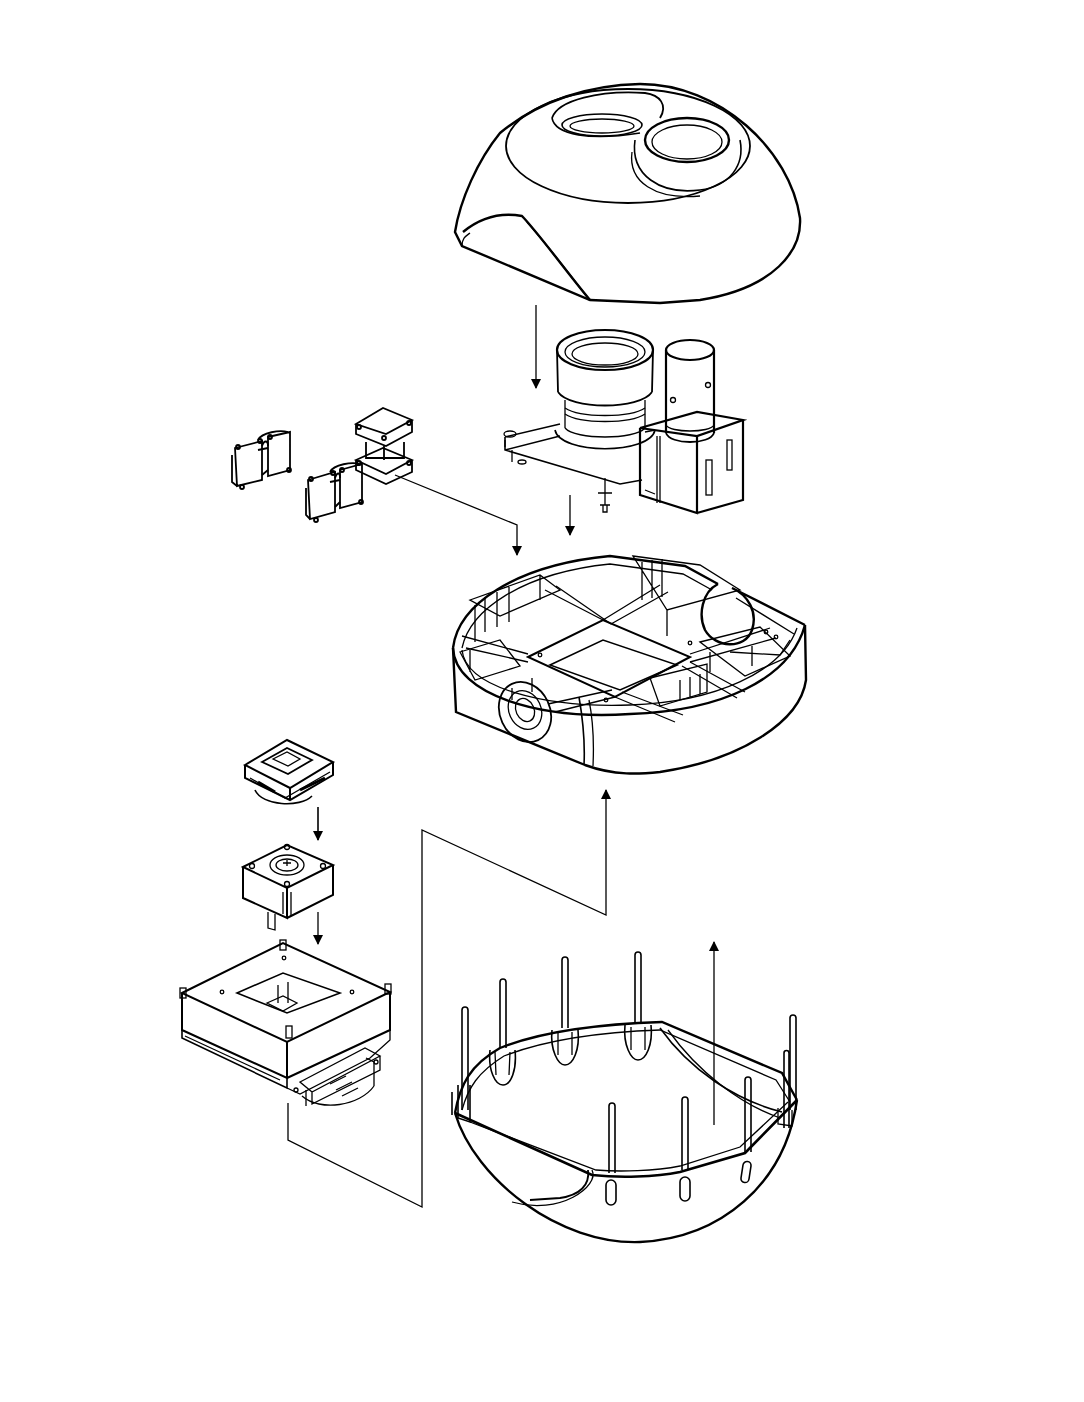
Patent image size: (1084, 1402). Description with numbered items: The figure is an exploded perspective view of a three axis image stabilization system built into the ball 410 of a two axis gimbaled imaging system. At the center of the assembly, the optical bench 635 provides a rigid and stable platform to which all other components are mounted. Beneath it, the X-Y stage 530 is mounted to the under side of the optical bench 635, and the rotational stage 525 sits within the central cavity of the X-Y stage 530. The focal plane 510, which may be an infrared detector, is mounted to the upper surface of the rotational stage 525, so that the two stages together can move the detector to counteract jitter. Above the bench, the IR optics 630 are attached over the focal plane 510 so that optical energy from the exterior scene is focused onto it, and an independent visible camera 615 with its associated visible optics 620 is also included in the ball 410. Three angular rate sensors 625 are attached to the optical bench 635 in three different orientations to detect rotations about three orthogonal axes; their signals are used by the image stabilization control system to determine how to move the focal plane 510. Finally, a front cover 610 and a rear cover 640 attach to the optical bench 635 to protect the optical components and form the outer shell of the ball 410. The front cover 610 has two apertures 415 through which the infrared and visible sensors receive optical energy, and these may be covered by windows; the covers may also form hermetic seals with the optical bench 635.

The ball 410 is at (246, 166).
The apertures 415 is at (640, 100).
The front cover 610 is at (486, 162).
The IR optics 630 is at (570, 418).
The visible optics 620 is at (714, 360).
The visible camera 615 is at (732, 470).
The angular rate sensors 625 is at (370, 420).
The optical bench 635 is at (783, 700).
The focal plane 510 is at (248, 765).
The rotational stage 525 is at (248, 880).
The X-Y stage 530 is at (188, 1018).
The rear cover 640 is at (718, 1195).